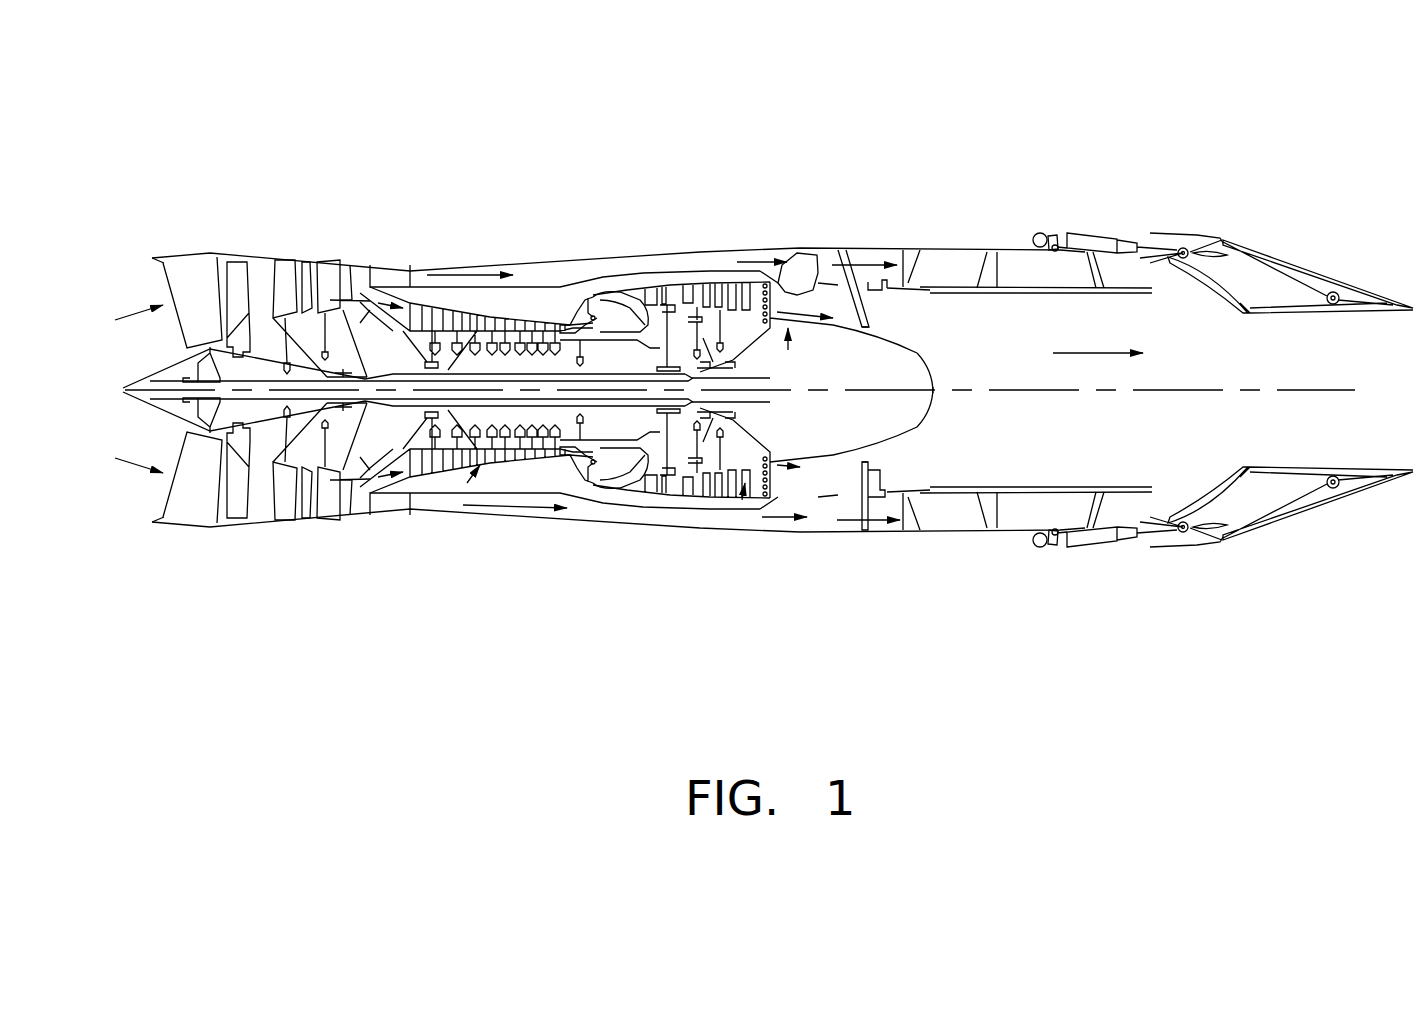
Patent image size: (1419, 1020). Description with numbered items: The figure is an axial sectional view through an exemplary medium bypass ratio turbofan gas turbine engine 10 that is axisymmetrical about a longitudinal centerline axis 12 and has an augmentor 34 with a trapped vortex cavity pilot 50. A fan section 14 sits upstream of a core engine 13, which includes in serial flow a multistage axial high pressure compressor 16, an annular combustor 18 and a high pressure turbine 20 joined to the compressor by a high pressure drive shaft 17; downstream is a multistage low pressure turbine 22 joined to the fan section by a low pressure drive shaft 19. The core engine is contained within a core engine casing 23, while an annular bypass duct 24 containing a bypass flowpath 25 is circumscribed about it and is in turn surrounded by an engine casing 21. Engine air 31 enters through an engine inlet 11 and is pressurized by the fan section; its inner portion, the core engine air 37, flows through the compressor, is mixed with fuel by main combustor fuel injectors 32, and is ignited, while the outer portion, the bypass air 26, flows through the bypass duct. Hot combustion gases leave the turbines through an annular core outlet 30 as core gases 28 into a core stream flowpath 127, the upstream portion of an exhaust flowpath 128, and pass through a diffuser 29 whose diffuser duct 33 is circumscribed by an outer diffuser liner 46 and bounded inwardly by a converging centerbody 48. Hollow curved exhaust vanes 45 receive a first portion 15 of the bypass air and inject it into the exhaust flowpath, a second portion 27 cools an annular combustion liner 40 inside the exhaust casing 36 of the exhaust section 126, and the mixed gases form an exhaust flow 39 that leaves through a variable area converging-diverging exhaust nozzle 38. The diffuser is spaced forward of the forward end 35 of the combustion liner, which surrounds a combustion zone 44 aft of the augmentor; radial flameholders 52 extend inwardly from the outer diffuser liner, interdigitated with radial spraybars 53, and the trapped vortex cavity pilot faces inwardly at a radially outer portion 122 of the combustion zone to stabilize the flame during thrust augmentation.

The turbofan gas turbine engine 10 is at (615, 140).
The engine inlet 11 is at (165, 500).
The centerline axis 12 is at (1160, 390).
The core engine 13 is at (467, 483).
The fan section 14 is at (283, 262).
The first portion of the bypass air 15 is at (742, 500).
The high pressure compressor 16 is at (467, 310).
The high pressure drive shaft 17 is at (629, 400).
The annular combustor 18 is at (617, 300).
The low pressure drive shaft 19 is at (642, 400).
The high pressure turbine 20 is at (667, 290).
The engine casing 21 is at (552, 267).
The low pressure turbine 22 is at (720, 280).
The core engine casing 23 is at (533, 447).
The bypass duct 24 is at (535, 267).
The bypass flowpath 25 is at (810, 284).
The bypass air 26 is at (465, 268).
The second portion of the bypass air 27 is at (870, 290).
The core gases 28 is at (747, 483).
The diffuser 29 is at (788, 353).
The core outlet 30 is at (777, 457).
The engine air 31 is at (123, 287).
The main combustor fuel injectors 32 is at (603, 480).
The diffuser duct 33 is at (843, 483).
The augmentor 34 is at (888, 455).
The forward end of the combustion liner 35 is at (898, 281).
The exhaust casing 36 is at (1023, 245).
The core engine air 37 is at (373, 515).
The exhaust nozzle 38 is at (1295, 175).
The exhaust flow 39 is at (1097, 353).
The combustion liner 40 is at (1032, 293).
The combustion zone 44 is at (1002, 333).
The exhaust vanes 45 is at (815, 284).
The outer diffuser liner 46 is at (790, 283).
The converging centerbody 48 is at (937, 394).
The trapped vortex cavity pilot 50 is at (882, 296).
The radial flameholders 52 is at (867, 307).
The radial spraybars 53 is at (868, 467).
The radially outer portion of the combustion zone 122 is at (960, 500).
The exhaust section 126 is at (995, 210).
The core stream flowpath 127 is at (830, 305).
The exhaust flowpath 128 is at (1146, 444).